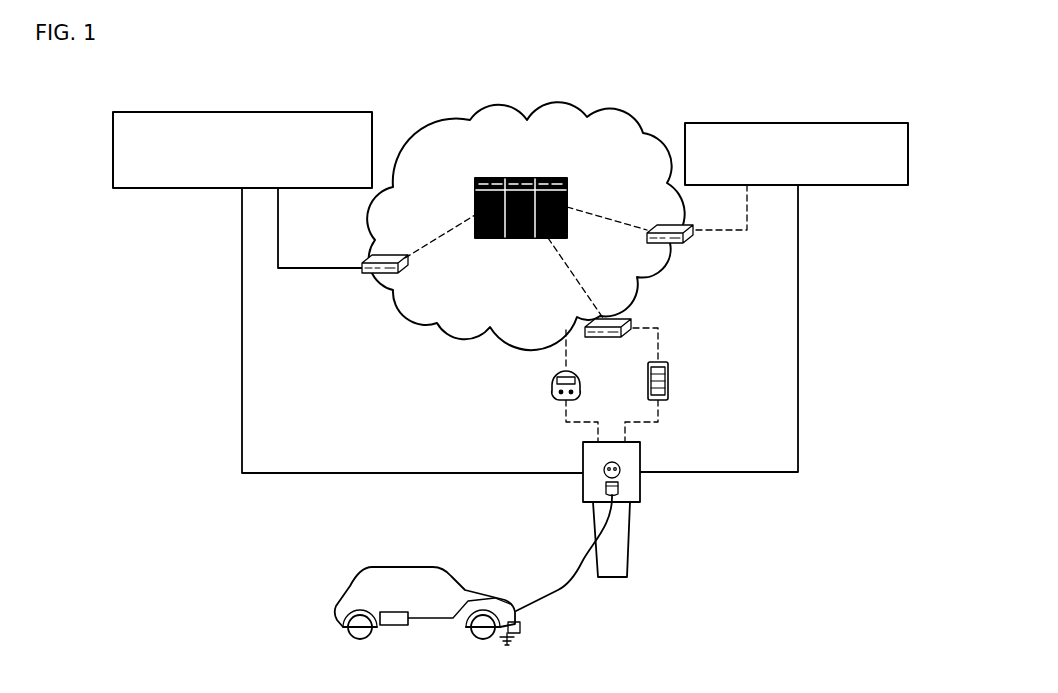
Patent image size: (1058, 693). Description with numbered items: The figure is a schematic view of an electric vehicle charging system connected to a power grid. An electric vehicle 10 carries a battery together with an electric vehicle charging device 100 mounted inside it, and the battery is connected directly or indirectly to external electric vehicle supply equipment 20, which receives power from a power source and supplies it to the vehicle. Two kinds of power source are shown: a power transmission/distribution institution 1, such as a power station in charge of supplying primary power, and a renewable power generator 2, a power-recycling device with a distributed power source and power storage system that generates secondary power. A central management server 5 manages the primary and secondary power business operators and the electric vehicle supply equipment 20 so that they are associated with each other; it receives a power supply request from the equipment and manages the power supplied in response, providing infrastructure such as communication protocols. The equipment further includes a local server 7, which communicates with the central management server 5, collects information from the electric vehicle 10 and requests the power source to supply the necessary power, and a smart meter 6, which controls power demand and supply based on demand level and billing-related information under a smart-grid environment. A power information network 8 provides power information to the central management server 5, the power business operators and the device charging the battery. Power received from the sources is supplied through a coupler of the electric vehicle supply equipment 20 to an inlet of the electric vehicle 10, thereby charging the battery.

The power transmission/distribution institution 1 is at (290, 112).
The renewable power generator 2 is at (875, 123).
The central management server 5 is at (475, 192).
The smart meter 6 is at (552, 384).
The local server 7 is at (669, 377).
The power information network 8 is at (435, 124).
The electric vehicle 10 is at (404, 578).
The electric vehicle supply equipment 20 is at (640, 456).
The electric vehicle charging device 100 is at (396, 628).